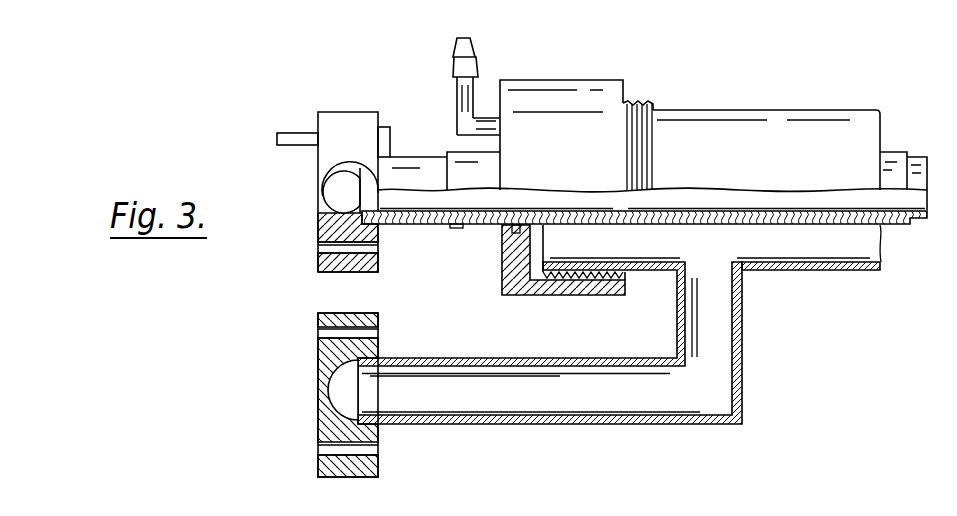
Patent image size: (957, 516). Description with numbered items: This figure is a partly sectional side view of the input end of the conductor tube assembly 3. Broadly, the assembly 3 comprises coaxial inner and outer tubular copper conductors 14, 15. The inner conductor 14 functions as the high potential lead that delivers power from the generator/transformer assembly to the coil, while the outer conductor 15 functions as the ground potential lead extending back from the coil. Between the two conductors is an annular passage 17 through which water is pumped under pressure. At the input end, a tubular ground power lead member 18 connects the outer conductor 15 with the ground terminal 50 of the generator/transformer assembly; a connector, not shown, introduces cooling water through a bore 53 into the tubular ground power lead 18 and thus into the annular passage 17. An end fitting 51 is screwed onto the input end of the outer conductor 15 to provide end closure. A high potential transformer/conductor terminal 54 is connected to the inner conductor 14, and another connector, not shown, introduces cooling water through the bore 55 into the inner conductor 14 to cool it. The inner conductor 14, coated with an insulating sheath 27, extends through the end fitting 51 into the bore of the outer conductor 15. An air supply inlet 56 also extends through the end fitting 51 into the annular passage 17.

The conductor tube assembly 3 is at (693, 88).
The inner conductor 14 is at (397, 225).
The outer conductor 15 is at (753, 127).
The annular passage 17 is at (787, 245).
The tubular ground power lead member 18 is at (572, 418).
The insulating sheath 27 is at (466, 229).
The ground terminal 50 is at (323, 425).
The end fitting 51 is at (500, 263).
The bore 53 is at (335, 390).
The high potential transformer/conductor terminal 54 is at (335, 123).
The bore 55 is at (327, 195).
The air supply inlet 56 is at (472, 54).